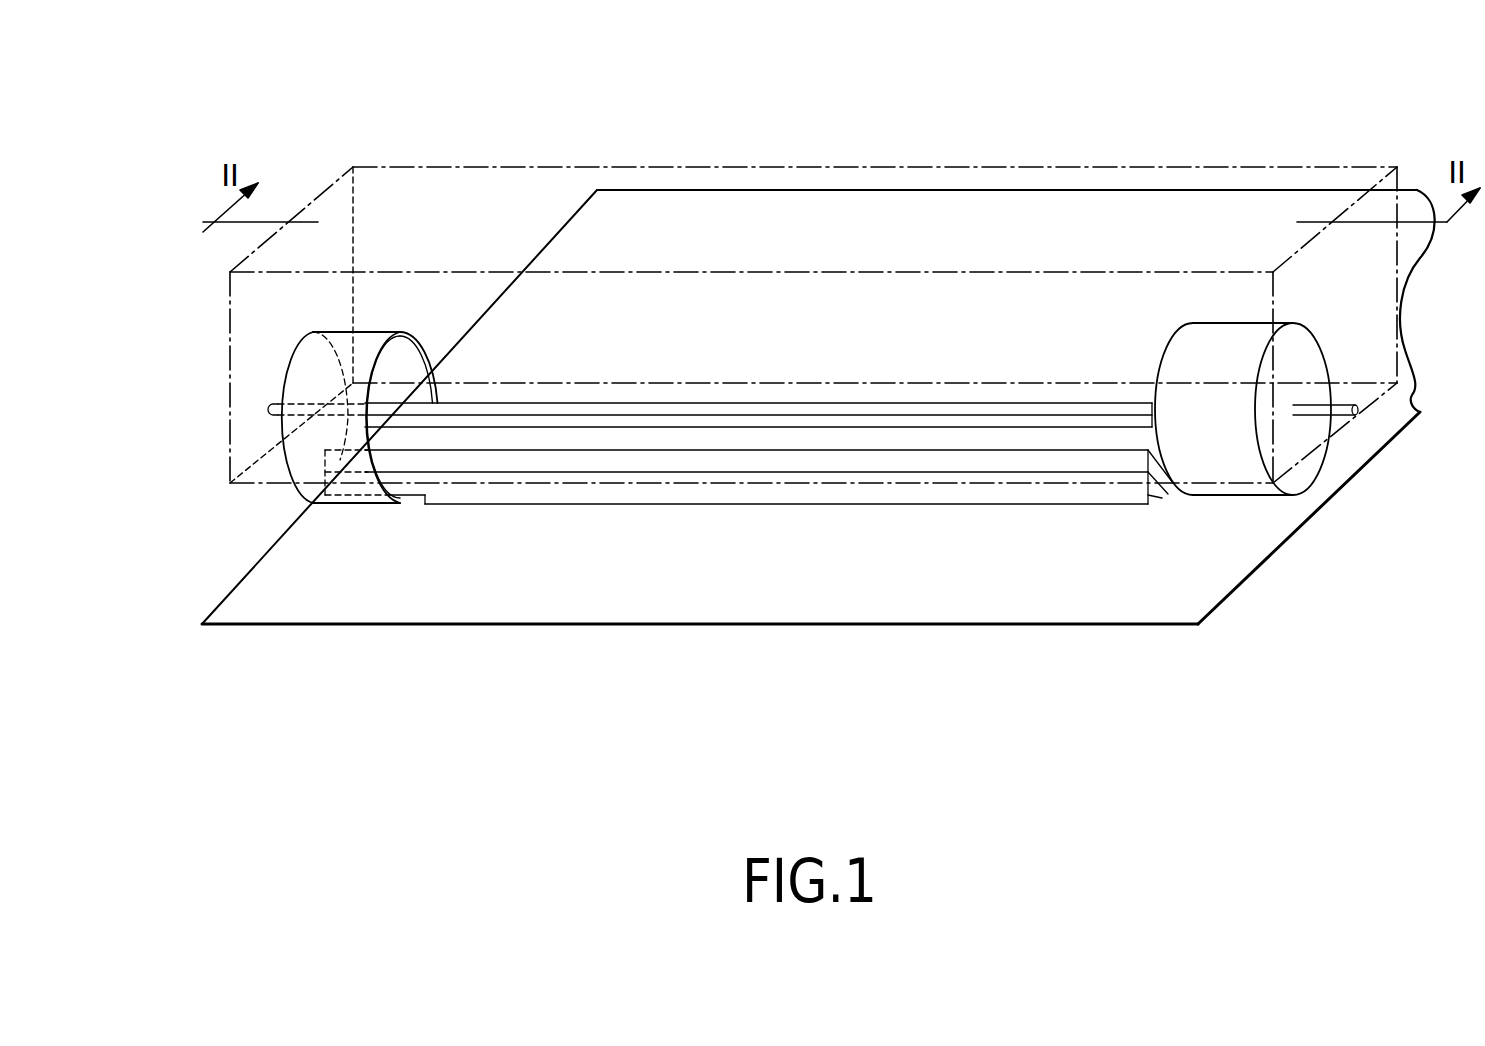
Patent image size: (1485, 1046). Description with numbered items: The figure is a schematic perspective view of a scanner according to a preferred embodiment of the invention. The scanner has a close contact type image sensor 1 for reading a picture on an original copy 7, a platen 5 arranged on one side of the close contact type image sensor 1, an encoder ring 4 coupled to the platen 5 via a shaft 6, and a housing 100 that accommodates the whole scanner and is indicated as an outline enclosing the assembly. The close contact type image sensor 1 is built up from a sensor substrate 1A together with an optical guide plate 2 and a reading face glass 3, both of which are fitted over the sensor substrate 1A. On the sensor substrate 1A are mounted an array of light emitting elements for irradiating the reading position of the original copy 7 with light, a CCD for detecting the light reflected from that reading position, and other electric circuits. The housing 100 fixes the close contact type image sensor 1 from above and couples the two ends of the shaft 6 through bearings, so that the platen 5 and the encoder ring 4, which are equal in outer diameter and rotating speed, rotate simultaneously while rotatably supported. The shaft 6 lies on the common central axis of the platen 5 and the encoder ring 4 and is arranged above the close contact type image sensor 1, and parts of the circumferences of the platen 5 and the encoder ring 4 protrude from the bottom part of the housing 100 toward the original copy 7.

The housing 100 is at (580, 165).
The original copy 7 is at (1053, 200).
The encoder ring 4 is at (372, 330).
The platen 5 is at (1258, 497).
The shaft 6 is at (832, 395).
The close contact type image sensor 1 is at (769, 601).
The sensor substrate 1A is at (675, 458).
The optical guide plate 2 is at (760, 488).
The reading face glass 3 is at (647, 707).